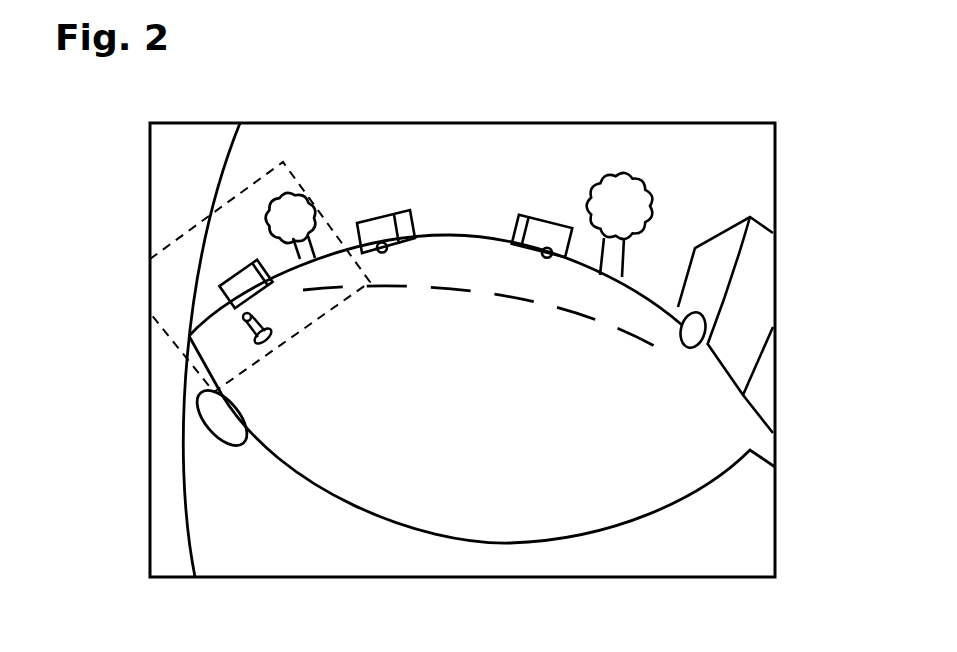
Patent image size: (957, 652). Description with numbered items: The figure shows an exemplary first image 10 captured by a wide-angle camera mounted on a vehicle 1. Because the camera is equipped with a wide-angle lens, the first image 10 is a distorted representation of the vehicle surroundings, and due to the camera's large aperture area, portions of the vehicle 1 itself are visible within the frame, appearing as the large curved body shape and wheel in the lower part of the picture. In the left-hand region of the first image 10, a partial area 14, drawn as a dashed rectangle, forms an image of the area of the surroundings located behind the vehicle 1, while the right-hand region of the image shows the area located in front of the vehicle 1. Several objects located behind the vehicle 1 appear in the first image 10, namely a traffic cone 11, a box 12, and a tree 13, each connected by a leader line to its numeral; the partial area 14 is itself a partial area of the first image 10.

The vehicle 1 is at (750, 531).
The first image 10 is at (775, 188).
The traffic cone 11 is at (248, 326).
The box 12 is at (220, 287).
The tree 13 is at (282, 212).
The partial area 14 is at (183, 238).